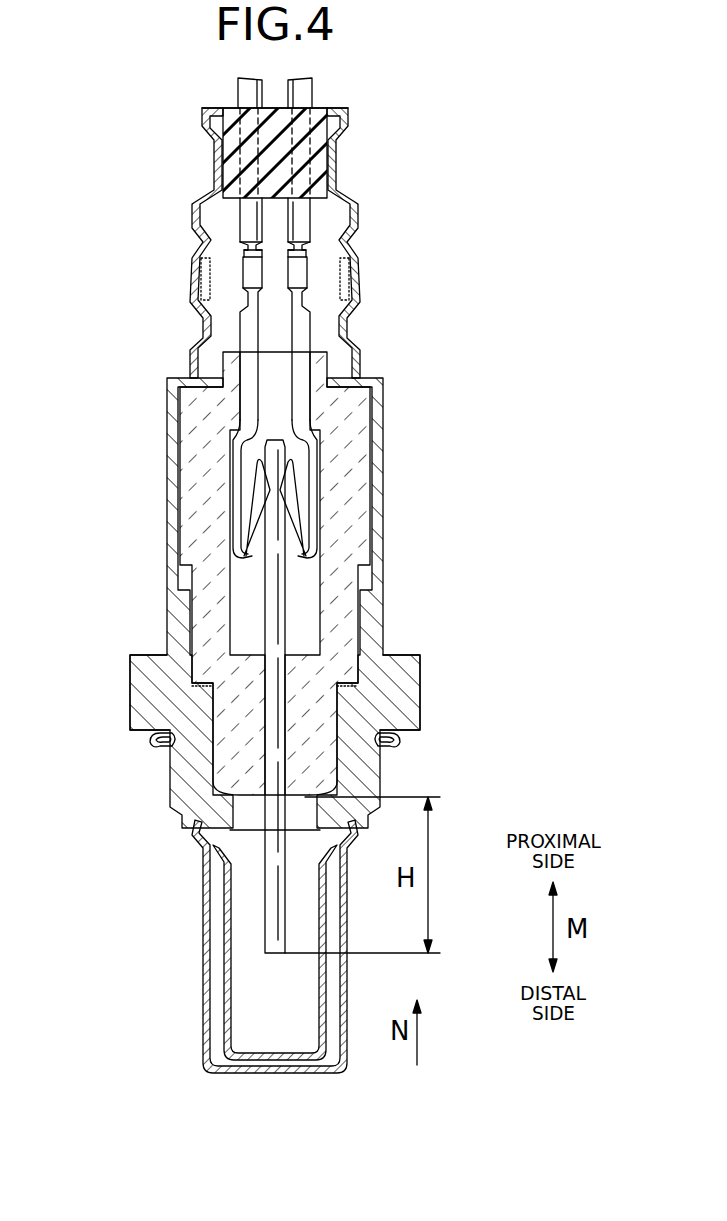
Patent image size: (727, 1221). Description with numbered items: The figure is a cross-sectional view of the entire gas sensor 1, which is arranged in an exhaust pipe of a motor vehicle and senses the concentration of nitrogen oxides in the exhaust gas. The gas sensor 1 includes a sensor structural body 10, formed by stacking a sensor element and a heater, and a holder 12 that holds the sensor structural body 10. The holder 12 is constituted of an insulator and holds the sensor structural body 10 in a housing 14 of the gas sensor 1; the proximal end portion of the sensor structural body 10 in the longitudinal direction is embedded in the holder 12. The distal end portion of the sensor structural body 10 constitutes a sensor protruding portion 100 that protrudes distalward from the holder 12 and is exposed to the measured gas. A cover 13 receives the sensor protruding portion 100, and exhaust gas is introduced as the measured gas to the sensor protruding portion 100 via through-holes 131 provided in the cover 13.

The gas sensor 1 is at (431, 575).
The sensor structural body 10 is at (276, 628).
The holder 12 is at (322, 706).
The housing 14 is at (157, 685).
The sensor protruding portion 100 is at (278, 871).
The cover 13 is at (204, 967).
The through-holes 131 is at (204, 1021).